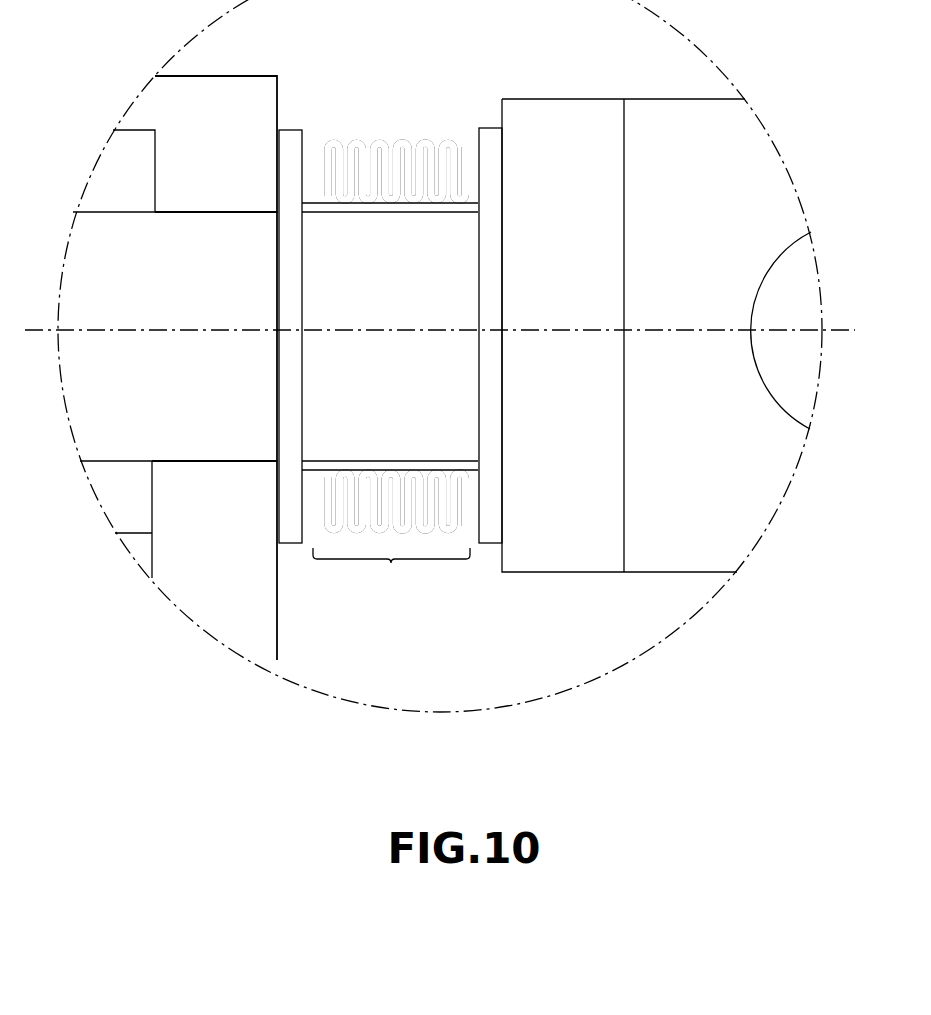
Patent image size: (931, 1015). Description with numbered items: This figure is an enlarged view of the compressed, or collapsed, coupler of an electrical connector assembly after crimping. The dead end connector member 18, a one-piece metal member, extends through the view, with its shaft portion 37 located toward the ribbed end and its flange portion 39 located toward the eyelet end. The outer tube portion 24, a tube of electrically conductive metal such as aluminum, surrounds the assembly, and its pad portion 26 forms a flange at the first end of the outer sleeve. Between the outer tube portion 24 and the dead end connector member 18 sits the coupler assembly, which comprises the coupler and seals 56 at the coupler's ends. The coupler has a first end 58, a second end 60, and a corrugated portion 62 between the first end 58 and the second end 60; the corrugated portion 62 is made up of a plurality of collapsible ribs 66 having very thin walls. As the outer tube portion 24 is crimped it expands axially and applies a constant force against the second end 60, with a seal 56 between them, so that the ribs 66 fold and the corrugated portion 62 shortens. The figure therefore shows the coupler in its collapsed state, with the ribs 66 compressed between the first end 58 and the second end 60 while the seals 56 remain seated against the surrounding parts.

The dead end connector member 18 is at (760, 166).
The outer tube portion 24 is at (105, 188).
The pad portion 26 is at (226, 152).
The shaft portion 37 is at (437, 277).
The flange portion 39 is at (572, 143).
The seals 56 is at (297, 392).
The first end 58 is at (470, 152).
The second end 60 is at (313, 152).
The corrugated portion 62 is at (391, 539).
The collapsible ribs 66 is at (418, 153).